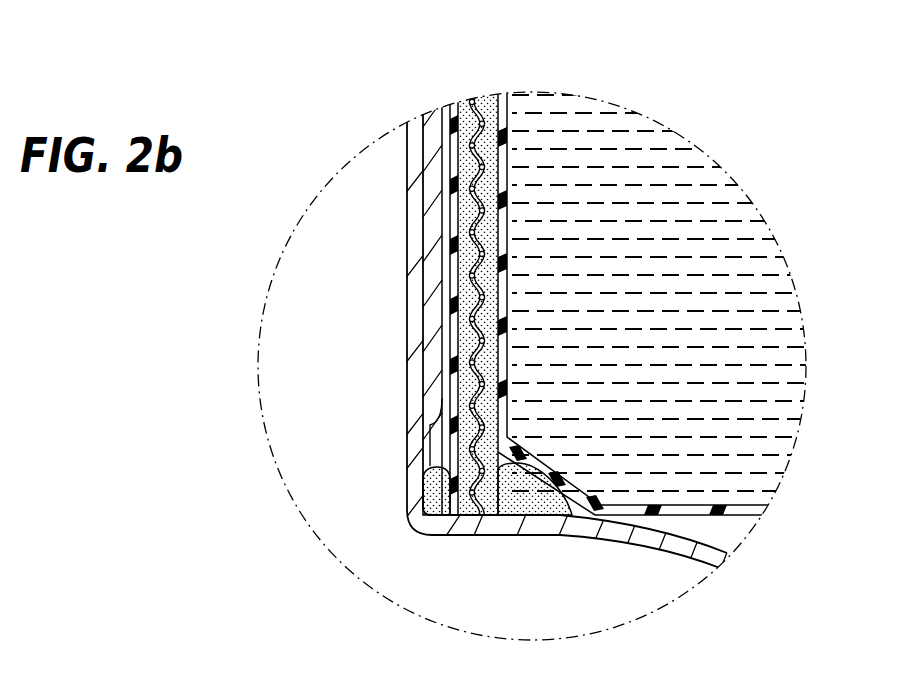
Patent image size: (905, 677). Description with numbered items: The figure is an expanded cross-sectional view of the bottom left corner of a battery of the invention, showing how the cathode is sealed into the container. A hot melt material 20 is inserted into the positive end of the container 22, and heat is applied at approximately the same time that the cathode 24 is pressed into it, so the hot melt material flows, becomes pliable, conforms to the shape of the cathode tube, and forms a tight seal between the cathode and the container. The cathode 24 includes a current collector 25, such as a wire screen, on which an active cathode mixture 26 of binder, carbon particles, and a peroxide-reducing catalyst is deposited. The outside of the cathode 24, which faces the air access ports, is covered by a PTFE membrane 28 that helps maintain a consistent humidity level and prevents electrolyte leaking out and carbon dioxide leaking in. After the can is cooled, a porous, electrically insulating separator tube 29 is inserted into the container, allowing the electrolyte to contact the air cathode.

The hot melt material 20 is at (527, 503).
The container 22 is at (410, 383).
The cathode 24 is at (460, 266).
The current collector 25 is at (467, 298).
The active cathode mixture 26 is at (467, 355).
The PTFE membrane 28 is at (455, 152).
The separator tube 29 is at (508, 157).